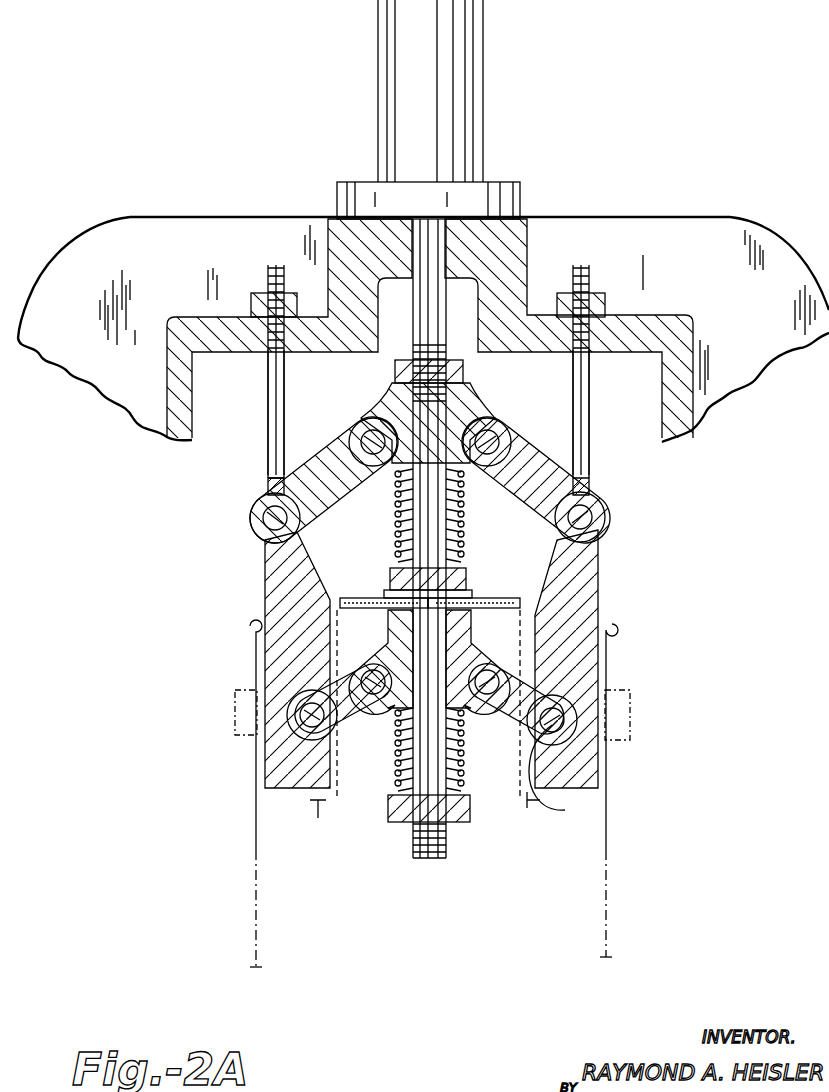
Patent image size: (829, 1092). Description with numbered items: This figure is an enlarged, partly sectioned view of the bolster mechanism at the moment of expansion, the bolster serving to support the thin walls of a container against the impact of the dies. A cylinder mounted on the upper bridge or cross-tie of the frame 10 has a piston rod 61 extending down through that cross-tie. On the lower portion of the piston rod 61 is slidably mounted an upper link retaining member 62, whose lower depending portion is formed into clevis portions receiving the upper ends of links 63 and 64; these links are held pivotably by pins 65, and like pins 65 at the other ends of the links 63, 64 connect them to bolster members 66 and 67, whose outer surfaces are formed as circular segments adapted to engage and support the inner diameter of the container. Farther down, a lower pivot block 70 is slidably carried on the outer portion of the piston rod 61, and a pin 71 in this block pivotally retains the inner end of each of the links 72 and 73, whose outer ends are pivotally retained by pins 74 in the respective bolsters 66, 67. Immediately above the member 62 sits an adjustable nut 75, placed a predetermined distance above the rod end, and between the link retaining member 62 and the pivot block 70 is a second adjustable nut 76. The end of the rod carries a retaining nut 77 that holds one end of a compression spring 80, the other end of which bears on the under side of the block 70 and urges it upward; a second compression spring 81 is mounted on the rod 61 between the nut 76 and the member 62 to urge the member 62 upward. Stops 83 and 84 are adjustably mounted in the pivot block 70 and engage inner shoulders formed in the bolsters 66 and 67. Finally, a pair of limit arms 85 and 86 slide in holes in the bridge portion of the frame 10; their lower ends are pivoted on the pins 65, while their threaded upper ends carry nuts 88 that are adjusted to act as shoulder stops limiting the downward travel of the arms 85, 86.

The frame 10 is at (523, 253).
The piston rod 61 is at (445, 308).
The upper link retaining member 62 is at (472, 418).
The link 63 is at (547, 462).
The link 64 is at (350, 450).
The pins 65 is at (495, 446).
The bolster member 66 is at (585, 592).
The bolster member 67 is at (272, 598).
The lower pivot block 70 is at (462, 662).
The pin 71 is at (488, 682).
The link 72 is at (542, 720).
The link 73 is at (325, 738).
The pins 74 is at (558, 772).
The adjustable nut 75 is at (463, 378).
The adjustable nut 76 is at (452, 568).
The retaining nut 77 is at (470, 818).
The compression spring 80 is at (458, 782).
The compression spring 81 is at (458, 514).
The stop 83 is at (519, 598).
The stop 84 is at (390, 598).
The limit arm 85 is at (588, 415).
The limit arm 86 is at (268, 430).
The nuts 88 is at (272, 292).